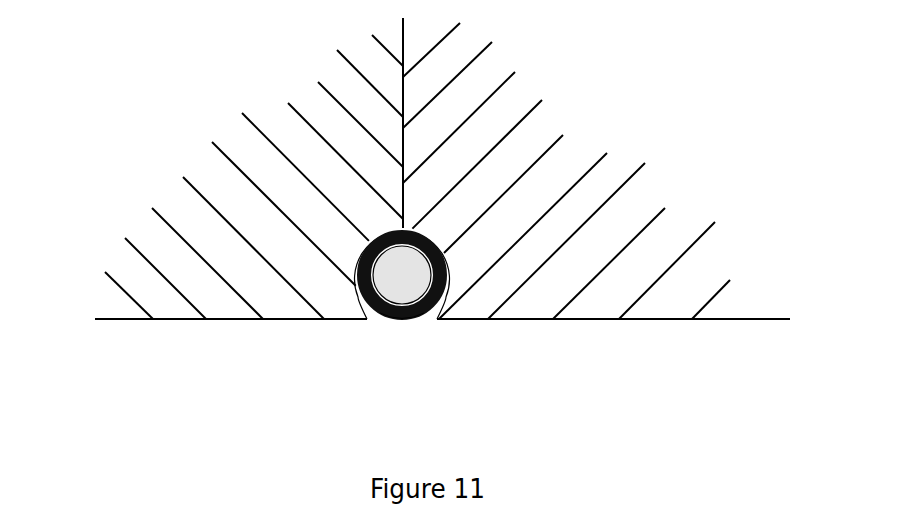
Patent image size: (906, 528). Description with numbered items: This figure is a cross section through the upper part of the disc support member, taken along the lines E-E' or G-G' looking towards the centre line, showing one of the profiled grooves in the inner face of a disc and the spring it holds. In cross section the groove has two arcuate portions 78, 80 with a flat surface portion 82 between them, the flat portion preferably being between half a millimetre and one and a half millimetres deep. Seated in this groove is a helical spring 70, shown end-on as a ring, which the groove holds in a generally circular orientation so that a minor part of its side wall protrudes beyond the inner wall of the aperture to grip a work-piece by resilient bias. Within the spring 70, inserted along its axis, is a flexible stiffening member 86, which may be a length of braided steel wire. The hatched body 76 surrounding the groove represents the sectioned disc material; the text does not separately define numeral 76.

The helical spring 70 is at (395, 319).
The hatched body / substrate 76 is at (352, 245).
The arcuate portion 78 is at (442, 313).
The arcuate portion 80 is at (433, 235).
The flat surface portion 82 is at (449, 273).
The flexible stiffening member 86 is at (395, 272).